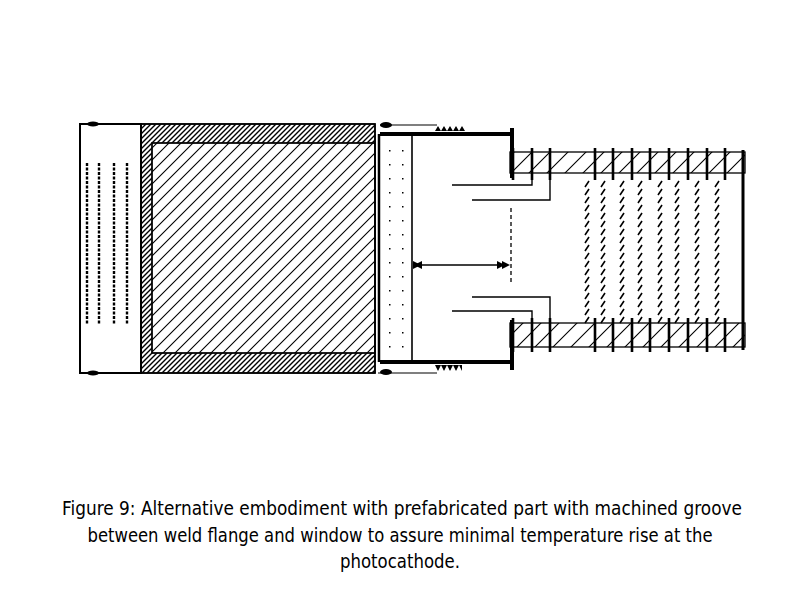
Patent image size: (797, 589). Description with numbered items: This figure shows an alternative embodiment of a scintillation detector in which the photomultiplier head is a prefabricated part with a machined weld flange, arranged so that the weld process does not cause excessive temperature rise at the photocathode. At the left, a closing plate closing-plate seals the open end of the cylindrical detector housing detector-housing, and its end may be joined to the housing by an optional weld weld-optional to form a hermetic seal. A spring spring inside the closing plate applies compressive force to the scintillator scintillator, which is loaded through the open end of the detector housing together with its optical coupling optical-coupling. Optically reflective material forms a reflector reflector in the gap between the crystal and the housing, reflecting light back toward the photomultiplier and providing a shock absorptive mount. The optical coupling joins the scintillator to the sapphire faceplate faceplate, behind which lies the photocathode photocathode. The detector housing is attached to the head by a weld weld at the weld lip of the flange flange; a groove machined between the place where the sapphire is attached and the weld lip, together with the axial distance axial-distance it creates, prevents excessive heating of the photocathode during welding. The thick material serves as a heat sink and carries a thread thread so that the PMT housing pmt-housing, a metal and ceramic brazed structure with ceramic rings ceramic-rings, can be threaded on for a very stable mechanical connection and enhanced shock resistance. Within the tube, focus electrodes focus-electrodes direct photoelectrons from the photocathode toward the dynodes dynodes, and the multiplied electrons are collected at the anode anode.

The closing plate closing-plate is at (82, 167).
The optional weld weld-optional is at (93, 125).
The element spring is at (114, 173).
The detector housing detector-housing is at (247, 123).
The element scintillator is at (206, 345).
The reflector and shock mounting reflector is at (272, 372).
The optical coupling optical-coupling is at (374, 375).
The element faceplate is at (378, 125).
The element photocathode is at (412, 150).
The element weld is at (386, 122).
The element thread is at (452, 125).
The weld flange is at (513, 130).
The PMT housing pmt-housing is at (568, 145).
The ceramic rings ceramic-rings is at (707, 347).
The element dynodes is at (725, 150).
The element anode is at (744, 150).
The focus electrodes focus-electrodes is at (485, 313).
The axial distance axial-distance is at (455, 258).